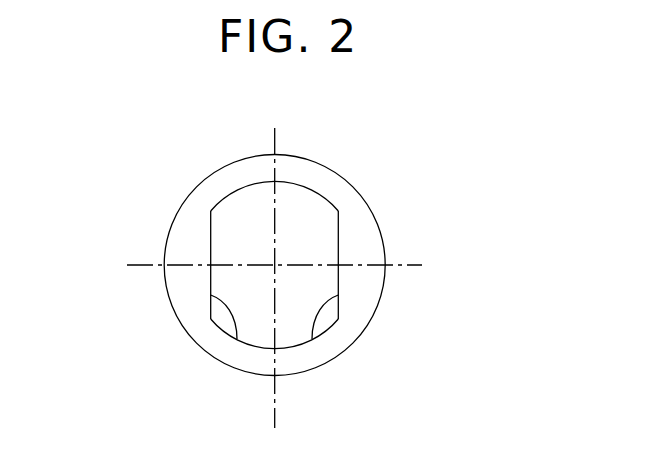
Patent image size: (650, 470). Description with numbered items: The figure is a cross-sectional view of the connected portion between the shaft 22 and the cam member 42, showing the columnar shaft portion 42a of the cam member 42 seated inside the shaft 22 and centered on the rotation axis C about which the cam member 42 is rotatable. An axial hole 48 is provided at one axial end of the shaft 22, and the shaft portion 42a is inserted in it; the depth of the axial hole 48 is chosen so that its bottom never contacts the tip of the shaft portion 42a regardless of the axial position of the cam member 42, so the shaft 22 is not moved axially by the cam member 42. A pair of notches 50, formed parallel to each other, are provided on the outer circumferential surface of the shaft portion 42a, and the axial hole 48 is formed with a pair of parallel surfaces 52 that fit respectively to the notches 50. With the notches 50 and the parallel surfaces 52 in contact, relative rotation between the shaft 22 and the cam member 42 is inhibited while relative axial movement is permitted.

The shaft 22 is at (168, 303).
The cam member 42 is at (319, 232).
The shaft portion 42a is at (298, 219).
The axial hole 48 is at (266, 186).
The notches 50 is at (208, 250).
The parallel surfaces 52 is at (236, 339).
The rotation axis C is at (276, 266).